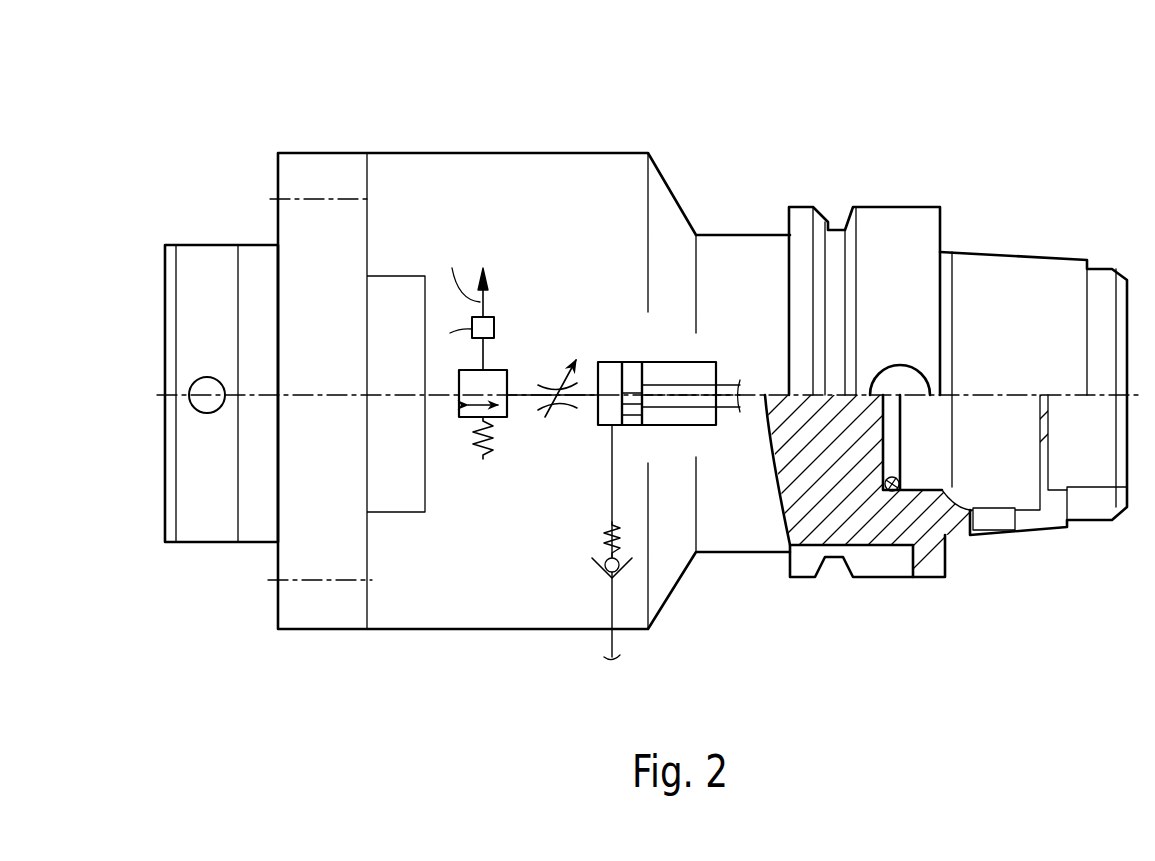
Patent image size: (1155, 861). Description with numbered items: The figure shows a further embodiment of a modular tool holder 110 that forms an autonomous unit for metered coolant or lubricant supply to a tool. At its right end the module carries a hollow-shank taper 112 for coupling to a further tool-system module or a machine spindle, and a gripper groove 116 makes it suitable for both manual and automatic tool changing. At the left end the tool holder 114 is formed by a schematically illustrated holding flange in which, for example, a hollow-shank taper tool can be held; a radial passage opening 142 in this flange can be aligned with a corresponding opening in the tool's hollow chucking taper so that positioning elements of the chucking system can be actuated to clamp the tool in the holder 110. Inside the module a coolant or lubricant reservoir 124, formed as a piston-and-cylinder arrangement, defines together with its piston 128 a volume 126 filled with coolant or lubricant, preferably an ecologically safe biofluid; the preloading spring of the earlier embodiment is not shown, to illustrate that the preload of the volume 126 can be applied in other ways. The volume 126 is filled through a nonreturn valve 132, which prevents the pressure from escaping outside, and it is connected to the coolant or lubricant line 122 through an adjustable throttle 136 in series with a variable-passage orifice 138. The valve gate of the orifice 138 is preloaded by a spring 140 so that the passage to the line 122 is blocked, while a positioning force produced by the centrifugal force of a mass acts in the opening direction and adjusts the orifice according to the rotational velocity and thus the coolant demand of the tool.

The tool holder 110 is at (452, 140).
The hollow-shank taper 112 is at (990, 275).
The tool holder 114 is at (255, 293).
The gripper groove 116 is at (840, 218).
The coolant or lubricant line 122 is at (445, 407).
The coolant or lubricant reservoir 124 is at (712, 350).
The volume 126 is at (608, 373).
The piston 128 is at (632, 375).
The nonreturn valve 132 is at (610, 573).
The adjustable throttle or throttle valve 136 is at (560, 430).
The variable-passage orifice 138 is at (508, 358).
The spring 140 is at (483, 459).
The radial passage opening 142 is at (198, 408).